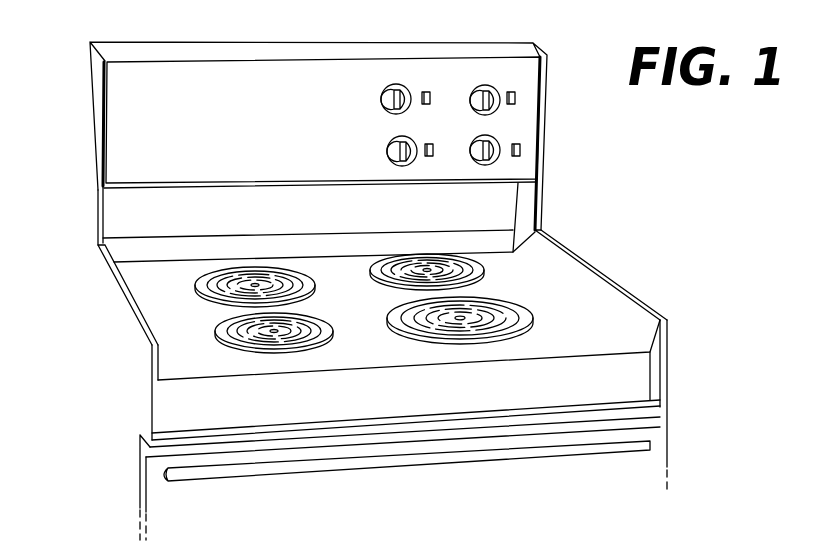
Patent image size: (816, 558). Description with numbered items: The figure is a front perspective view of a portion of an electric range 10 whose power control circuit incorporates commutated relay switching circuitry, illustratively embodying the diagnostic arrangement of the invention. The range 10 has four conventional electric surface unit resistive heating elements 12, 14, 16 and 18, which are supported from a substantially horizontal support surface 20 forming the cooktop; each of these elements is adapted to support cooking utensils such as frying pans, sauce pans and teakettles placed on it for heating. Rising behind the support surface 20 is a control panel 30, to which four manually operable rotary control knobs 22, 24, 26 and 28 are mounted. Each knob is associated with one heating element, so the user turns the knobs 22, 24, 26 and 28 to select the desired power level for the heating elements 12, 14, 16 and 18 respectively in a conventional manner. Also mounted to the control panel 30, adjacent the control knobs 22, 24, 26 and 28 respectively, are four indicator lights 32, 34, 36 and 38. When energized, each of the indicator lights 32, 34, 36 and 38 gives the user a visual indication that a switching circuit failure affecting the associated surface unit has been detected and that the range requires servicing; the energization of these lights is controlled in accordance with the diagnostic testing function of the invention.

The electric range 10 is at (378, 291).
The surface unit resistive heating element 12 is at (521, 317).
The surface unit resistive heating element 14 is at (483, 265).
The surface unit resistive heating element 16 is at (331, 334).
The surface unit resistive heating element 18 is at (314, 284).
The support surface 20 is at (147, 298).
The rotary control knob 22 is at (491, 146).
The rotary control knob 24 is at (486, 96).
The rotary control knob 26 is at (386, 152).
The rotary control knob 28 is at (380, 99).
The control panel 30 is at (129, 112).
The indicator light 32 is at (522, 150).
The indicator light 34 is at (517, 97).
The indicator light 36 is at (434, 149).
The indicator light 38 is at (431, 97).